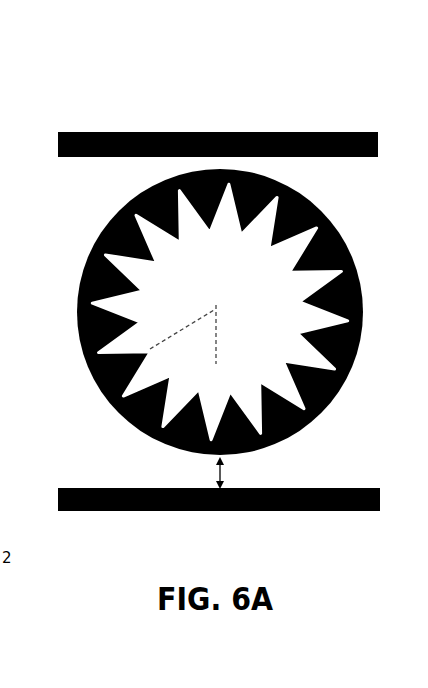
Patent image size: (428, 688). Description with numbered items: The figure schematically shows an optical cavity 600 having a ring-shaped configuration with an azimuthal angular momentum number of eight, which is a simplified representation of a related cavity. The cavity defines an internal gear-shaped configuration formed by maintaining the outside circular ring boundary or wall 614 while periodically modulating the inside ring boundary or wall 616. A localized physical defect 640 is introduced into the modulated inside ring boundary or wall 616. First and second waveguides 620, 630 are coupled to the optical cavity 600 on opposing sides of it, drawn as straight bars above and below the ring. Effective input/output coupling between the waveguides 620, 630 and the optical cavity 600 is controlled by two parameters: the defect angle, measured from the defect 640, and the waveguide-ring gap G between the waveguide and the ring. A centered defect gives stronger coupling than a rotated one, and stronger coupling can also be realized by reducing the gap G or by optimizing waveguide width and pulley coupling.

The optical cavity 600 is at (206, 279).
The outside circular ring boundary or wall 614 is at (357, 352).
The inside ring boundary or wall 616 is at (297, 343).
The first waveguide 620 is at (135, 130).
The second waveguide 630 is at (328, 495).
The localized physical defect 640 is at (164, 323).
The waveguide-ring gap G is at (199, 473).